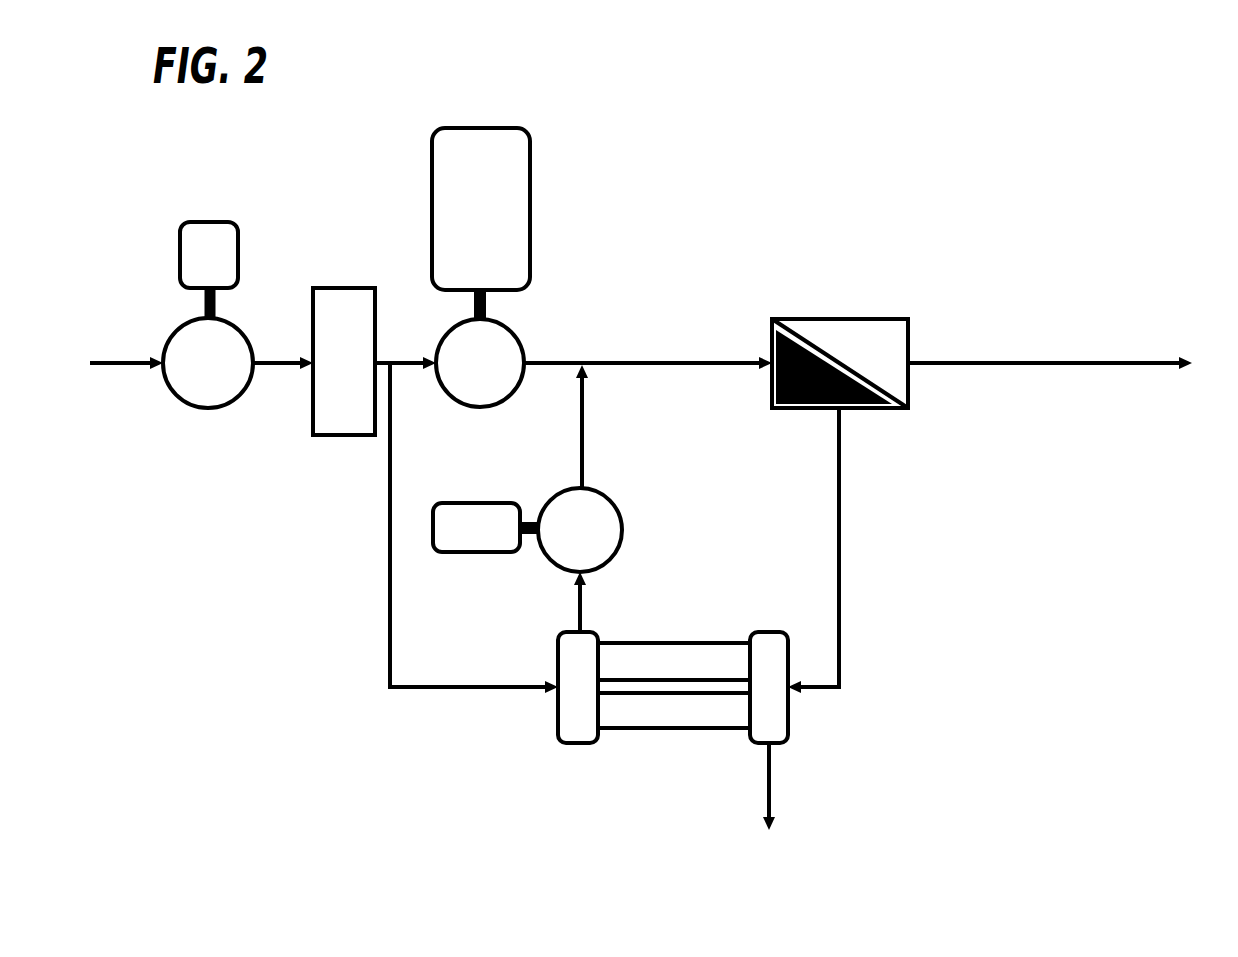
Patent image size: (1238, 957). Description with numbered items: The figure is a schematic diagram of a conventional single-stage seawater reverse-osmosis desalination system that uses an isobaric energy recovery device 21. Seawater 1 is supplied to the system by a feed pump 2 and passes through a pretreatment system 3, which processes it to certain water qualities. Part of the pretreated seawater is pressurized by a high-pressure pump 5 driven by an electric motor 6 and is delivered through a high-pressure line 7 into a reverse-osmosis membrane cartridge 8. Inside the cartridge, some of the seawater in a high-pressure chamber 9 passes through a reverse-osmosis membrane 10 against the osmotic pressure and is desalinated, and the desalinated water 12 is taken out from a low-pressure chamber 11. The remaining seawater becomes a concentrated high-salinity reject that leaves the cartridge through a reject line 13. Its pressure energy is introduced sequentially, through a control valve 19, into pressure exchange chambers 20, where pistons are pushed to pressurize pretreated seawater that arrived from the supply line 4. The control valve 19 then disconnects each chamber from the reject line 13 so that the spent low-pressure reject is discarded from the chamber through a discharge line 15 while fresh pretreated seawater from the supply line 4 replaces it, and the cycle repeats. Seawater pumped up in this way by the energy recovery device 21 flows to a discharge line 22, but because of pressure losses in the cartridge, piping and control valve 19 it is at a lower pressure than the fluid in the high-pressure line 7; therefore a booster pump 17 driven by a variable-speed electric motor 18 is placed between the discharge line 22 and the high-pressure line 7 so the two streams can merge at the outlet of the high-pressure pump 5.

The seawater 1 is at (104, 366).
The feed pump 2 is at (195, 395).
The pretreatment system 3 is at (325, 430).
The supply line 4 is at (403, 357).
The high-pressure pump 5 is at (507, 340).
The electric motor 6 is at (515, 168).
The high-pressure line 7 is at (660, 368).
The reverse-osmosis membrane cartridge 8 is at (896, 318).
The high-pressure chamber 9 is at (866, 408).
The reverse-osmosis membrane 10 is at (878, 384).
The low-pressure chamber 11 is at (906, 330).
The desalinated water 12 is at (1060, 343).
The reject line 13 is at (843, 517).
The discharge line 15 is at (770, 811).
The booster pump 17 is at (615, 533).
The variable-speed electric motor 18 is at (440, 553).
The control valve 19 is at (772, 637).
The pressure exchange chambers 20 is at (662, 720).
The isobaric energy recovery device 21 is at (612, 733).
The discharge line 22 is at (575, 612).